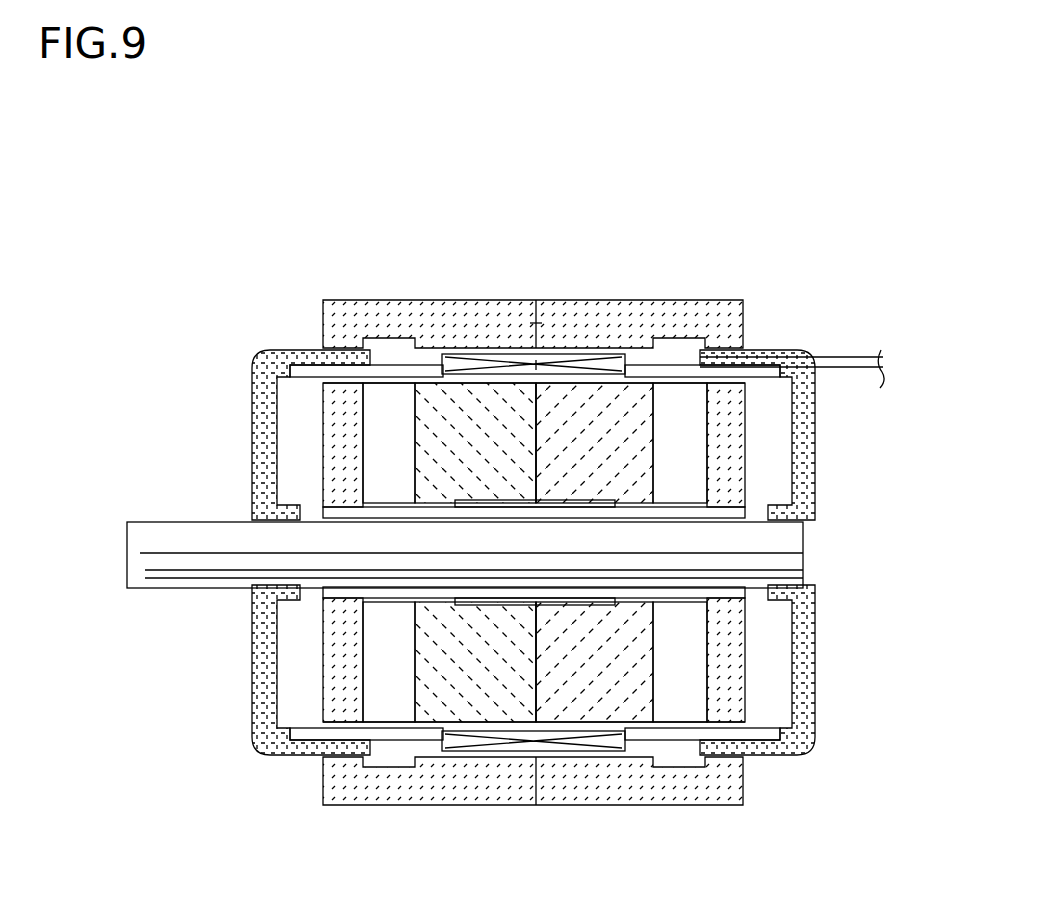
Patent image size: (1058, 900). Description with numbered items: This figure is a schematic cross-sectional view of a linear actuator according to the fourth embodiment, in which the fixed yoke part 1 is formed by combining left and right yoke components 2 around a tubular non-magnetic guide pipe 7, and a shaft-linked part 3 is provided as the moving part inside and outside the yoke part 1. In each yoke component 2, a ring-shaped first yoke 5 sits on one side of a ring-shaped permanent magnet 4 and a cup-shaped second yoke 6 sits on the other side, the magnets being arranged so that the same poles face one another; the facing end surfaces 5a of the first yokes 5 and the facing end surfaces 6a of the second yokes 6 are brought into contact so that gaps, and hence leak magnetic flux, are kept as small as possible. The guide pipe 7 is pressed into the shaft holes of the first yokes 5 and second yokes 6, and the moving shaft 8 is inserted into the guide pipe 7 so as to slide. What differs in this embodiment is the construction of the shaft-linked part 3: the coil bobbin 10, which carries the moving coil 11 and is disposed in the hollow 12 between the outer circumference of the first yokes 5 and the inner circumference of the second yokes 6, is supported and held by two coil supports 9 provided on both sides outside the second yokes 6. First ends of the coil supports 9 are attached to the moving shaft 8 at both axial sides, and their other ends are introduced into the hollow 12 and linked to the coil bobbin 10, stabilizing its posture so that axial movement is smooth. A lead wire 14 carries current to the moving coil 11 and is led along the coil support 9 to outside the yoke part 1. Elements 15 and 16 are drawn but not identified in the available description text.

The yoke part 1 is at (549, 168).
The yoke component 2 is at (428, 188).
The shaft-linked part 3 is at (883, 653).
The permanent magnet 4 is at (385, 397).
The first yoke 5 is at (430, 395).
The end surface of first yoke 5a is at (533, 397).
The second yoke 6 is at (343, 397).
The end surface of second yoke 6a is at (537, 323).
The guide pipe 7 is at (330, 512).
The moving shaft 8 is at (788, 546).
The coil support 9 is at (254, 423).
The coil bobbin 10 is at (422, 372).
The moving coil 11 is at (572, 358).
The hollow 12 is at (692, 347).
The lead wire 14 is at (849, 358).
The bearing 15 is at (600, 498).
The bearing holder 16 is at (712, 520).